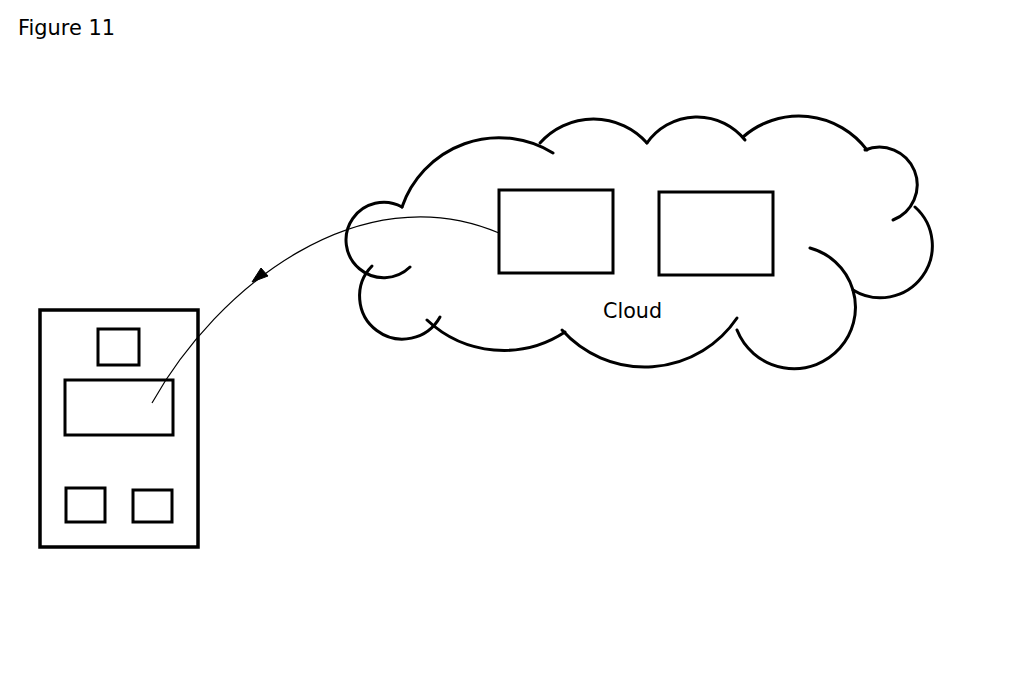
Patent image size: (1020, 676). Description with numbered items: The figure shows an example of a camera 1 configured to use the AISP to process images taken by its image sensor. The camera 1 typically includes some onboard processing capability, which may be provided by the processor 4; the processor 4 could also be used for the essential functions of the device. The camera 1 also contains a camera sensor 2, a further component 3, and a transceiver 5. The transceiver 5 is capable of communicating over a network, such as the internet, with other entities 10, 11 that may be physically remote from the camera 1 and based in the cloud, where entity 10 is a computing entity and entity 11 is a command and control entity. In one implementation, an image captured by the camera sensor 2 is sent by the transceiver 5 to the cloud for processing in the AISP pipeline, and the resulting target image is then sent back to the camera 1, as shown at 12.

The camera 1 is at (59, 330).
The camera sensor 2 is at (79, 507).
The memory unit 3 is at (148, 502).
The processor 4 is at (173, 415).
The transceiver 5 is at (115, 342).
The computing entity 10 is at (551, 190).
The command and control entity 11 is at (715, 192).
The return of resulting target image 12 is at (325, 310).